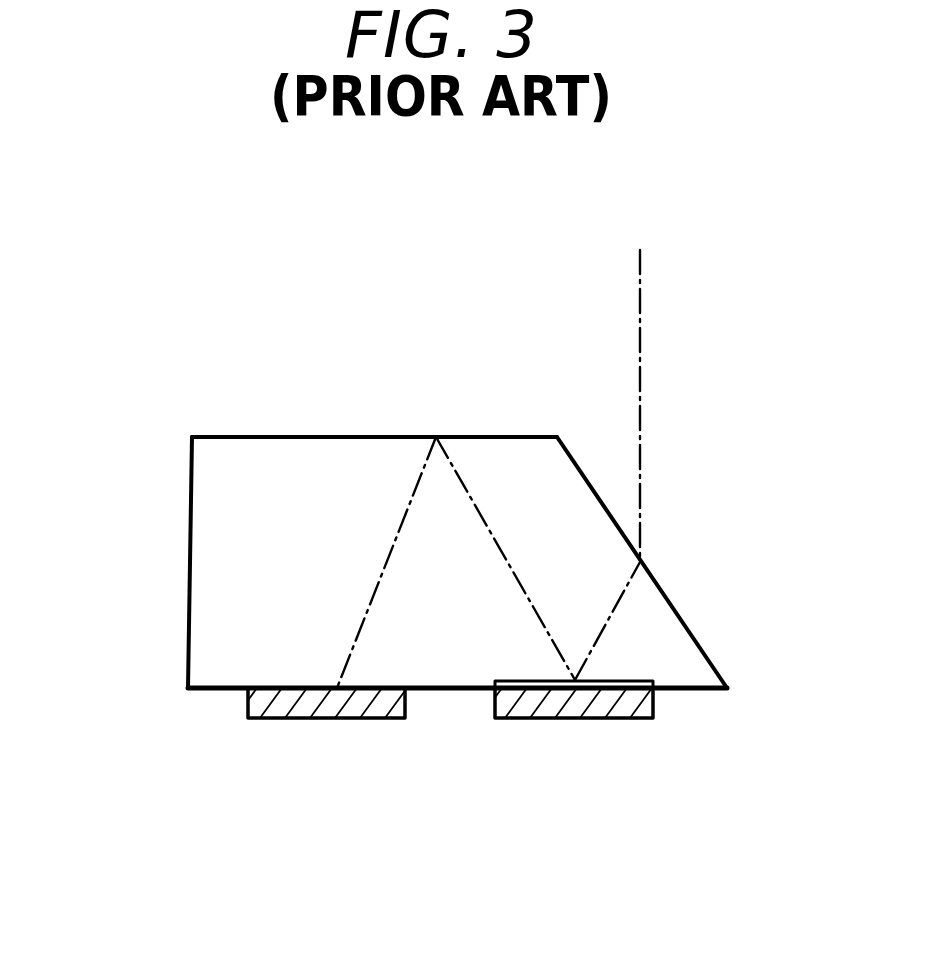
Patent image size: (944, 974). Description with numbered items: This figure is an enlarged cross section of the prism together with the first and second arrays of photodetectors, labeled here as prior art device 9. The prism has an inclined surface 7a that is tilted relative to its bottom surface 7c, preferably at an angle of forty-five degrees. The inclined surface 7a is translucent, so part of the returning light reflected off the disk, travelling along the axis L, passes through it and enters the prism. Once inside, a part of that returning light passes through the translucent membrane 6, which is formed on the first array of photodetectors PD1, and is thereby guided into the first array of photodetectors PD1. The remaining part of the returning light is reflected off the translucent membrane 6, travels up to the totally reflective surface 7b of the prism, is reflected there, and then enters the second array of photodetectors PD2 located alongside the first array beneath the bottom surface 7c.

The prior art light receiving device 9 is at (467, 530).
The inclined surface 7a is at (665, 592).
The totally reflective surface 7b is at (245, 446).
The bottom surface of prism 7c is at (703, 683).
The translucent membrane 6 is at (637, 685).
The incident light beam axis L is at (641, 286).
The first array of photodetectors PD1 is at (592, 723).
The second array of photodetectors PD2 is at (353, 718).